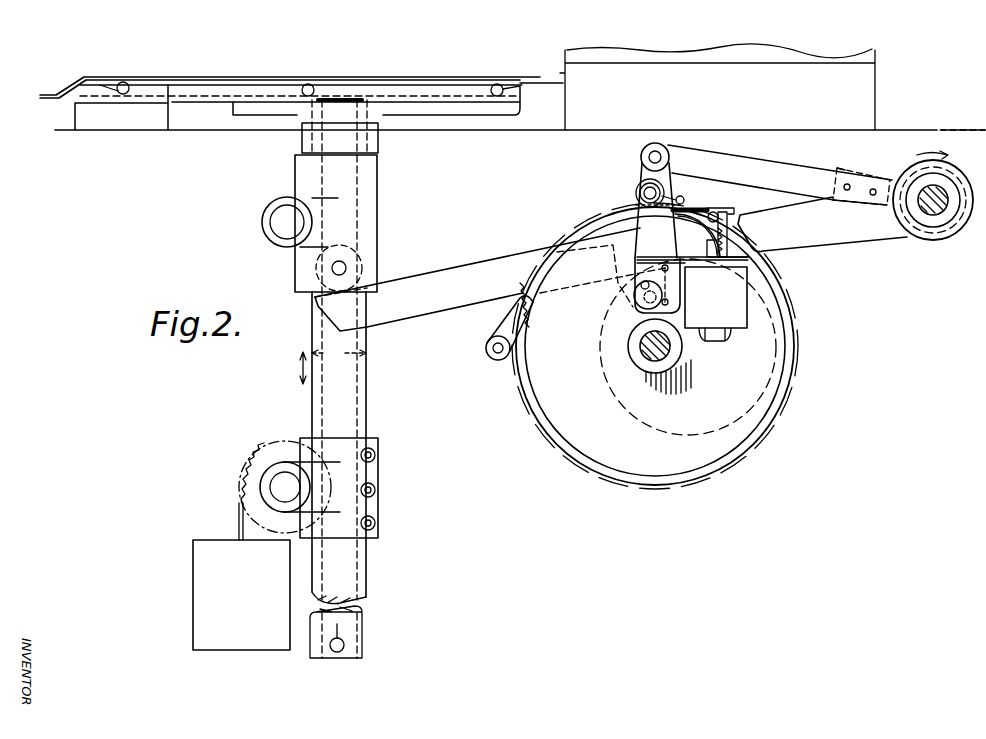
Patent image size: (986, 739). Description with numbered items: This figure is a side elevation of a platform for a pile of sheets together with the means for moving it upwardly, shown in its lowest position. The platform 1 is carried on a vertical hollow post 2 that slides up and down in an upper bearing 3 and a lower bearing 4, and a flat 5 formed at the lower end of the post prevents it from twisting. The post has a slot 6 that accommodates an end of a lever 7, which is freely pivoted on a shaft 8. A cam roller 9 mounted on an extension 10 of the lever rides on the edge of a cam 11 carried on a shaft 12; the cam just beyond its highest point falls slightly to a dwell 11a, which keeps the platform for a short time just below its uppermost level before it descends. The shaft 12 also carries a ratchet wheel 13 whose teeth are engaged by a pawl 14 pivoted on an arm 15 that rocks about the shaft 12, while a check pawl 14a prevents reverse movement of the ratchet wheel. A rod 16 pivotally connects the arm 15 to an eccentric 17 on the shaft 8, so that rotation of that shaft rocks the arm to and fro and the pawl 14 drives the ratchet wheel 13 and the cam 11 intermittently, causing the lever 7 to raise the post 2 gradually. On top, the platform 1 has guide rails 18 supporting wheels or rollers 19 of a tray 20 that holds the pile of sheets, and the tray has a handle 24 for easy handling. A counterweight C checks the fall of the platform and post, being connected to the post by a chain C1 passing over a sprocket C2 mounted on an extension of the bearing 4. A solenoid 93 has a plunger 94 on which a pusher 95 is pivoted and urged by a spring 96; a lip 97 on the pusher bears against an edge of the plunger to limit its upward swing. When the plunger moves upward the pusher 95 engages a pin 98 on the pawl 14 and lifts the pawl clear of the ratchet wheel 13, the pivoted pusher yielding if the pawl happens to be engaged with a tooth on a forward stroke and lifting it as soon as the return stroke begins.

The platform 1 is at (438, 108).
The vertical hollow post 2 is at (367, 382).
The bearing 3 is at (378, 222).
The bearing 4 is at (346, 462).
The flat 5 is at (368, 413).
The slot 6 is at (333, 363).
The lever 7 is at (463, 275).
The shaft 8 is at (924, 193).
The cam roller 9 is at (627, 313).
The extension 10 is at (636, 292).
The cam 11 is at (600, 369).
The dwell 11a is at (822, 224).
The shaft 12 is at (672, 352).
The ratchet wheel 13 is at (793, 381).
The pawl 14 is at (704, 210).
The check pawl 14a is at (493, 337).
The arm 15 is at (640, 181).
The rod 16 is at (761, 167).
The eccentric 17 is at (927, 241).
The guide rails 18 is at (431, 92).
The wheels or rollers 19 is at (311, 84).
The tray 20 is at (360, 81).
The handle 24 is at (37, 98).
The solenoid 93 is at (745, 304).
The plunger 94 is at (716, 258).
The pusher 95 is at (722, 214).
The spring 96 is at (730, 222).
The lip 97 is at (735, 239).
The pin 98 is at (681, 197).
The counterweight C is at (241, 595).
The chain C1 is at (245, 481).
The sprocket C2 is at (257, 495).